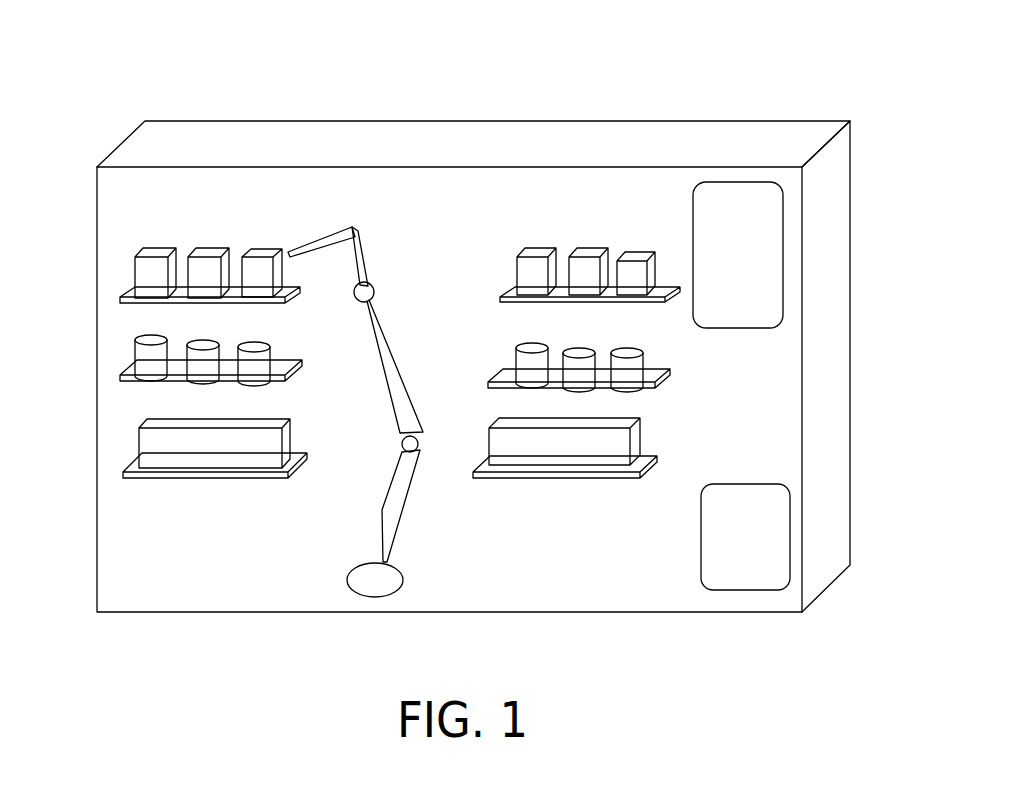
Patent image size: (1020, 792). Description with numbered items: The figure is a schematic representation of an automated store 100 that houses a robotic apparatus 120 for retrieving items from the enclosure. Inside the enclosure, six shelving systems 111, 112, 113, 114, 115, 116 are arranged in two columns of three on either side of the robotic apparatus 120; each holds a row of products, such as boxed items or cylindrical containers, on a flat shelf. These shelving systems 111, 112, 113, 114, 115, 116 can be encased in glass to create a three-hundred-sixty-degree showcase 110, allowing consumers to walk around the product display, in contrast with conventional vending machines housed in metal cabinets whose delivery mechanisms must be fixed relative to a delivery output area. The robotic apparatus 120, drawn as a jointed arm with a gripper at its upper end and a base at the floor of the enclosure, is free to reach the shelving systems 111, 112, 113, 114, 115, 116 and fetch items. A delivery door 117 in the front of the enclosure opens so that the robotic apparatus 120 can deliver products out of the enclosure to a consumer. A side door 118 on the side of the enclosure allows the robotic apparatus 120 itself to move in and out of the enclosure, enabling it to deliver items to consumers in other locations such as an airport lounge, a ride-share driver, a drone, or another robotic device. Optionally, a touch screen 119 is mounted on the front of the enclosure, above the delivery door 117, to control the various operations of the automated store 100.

The automated store 100 is at (243, 60).
The showcase 110 is at (737, 138).
The shelving system 111 is at (132, 295).
The shelving system 112 is at (132, 370).
The shelving system 113 is at (140, 467).
The shelving system 114 is at (556, 305).
The shelving system 115 is at (645, 388).
The shelving system 116 is at (543, 480).
The delivery door 117 is at (747, 568).
The side door 118 is at (828, 515).
The touch screen 119 is at (768, 255).
The robotic apparatus 120 is at (390, 330).